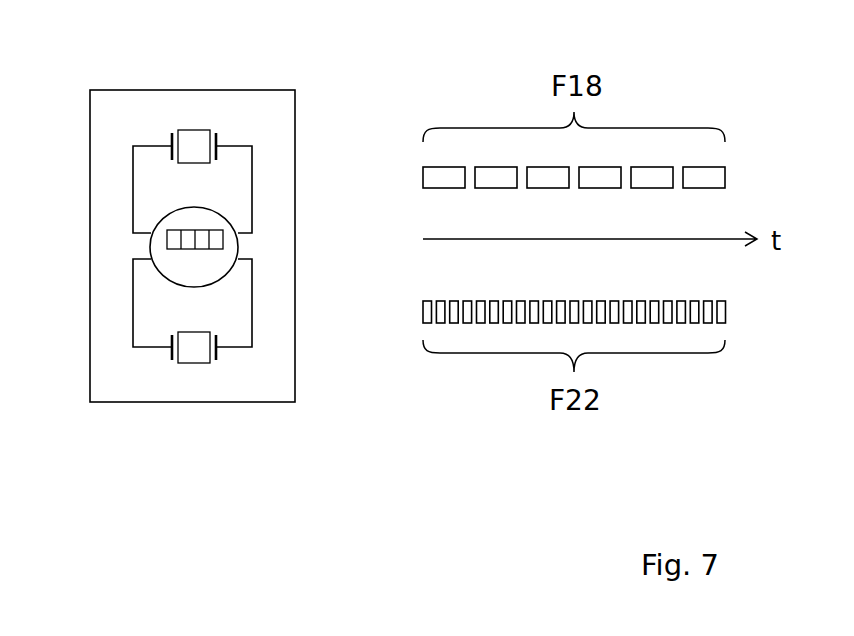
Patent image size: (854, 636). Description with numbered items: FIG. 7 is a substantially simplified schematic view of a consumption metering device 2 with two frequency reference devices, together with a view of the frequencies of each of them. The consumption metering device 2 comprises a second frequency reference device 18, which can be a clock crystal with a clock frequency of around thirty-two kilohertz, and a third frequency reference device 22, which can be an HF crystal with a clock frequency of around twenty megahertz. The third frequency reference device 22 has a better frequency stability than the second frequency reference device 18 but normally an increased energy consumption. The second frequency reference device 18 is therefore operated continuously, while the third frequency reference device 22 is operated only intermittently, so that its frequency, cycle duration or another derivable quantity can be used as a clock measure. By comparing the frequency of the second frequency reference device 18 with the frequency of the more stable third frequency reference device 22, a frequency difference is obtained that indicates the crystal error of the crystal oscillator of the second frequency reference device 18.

The consumption metering device 2 is at (260, 402).
The second frequency reference device 18 is at (190, 138).
The third frequency reference device 22 is at (190, 357).